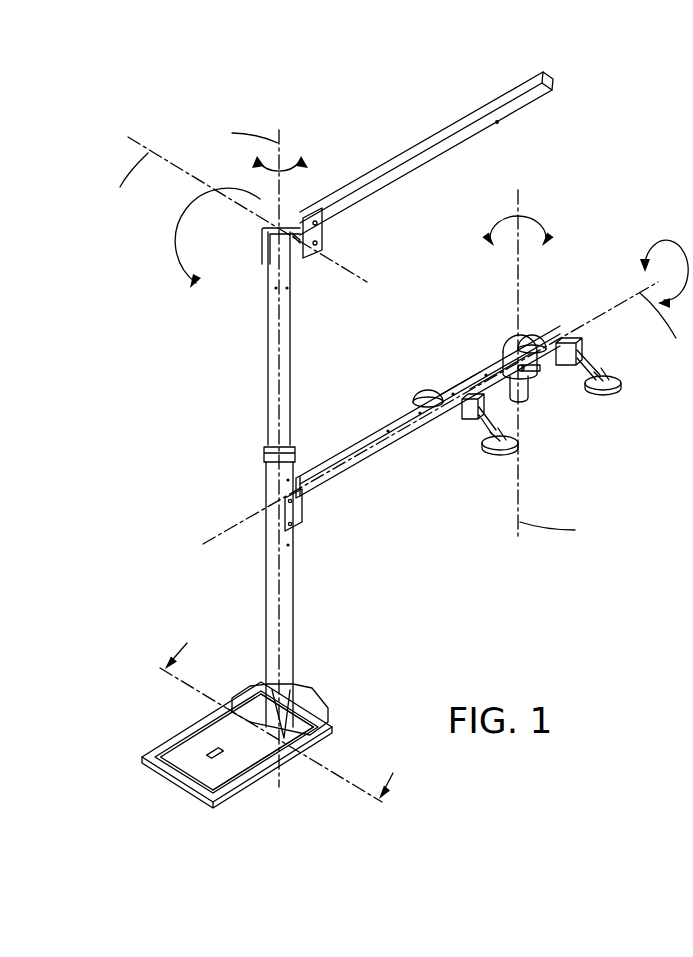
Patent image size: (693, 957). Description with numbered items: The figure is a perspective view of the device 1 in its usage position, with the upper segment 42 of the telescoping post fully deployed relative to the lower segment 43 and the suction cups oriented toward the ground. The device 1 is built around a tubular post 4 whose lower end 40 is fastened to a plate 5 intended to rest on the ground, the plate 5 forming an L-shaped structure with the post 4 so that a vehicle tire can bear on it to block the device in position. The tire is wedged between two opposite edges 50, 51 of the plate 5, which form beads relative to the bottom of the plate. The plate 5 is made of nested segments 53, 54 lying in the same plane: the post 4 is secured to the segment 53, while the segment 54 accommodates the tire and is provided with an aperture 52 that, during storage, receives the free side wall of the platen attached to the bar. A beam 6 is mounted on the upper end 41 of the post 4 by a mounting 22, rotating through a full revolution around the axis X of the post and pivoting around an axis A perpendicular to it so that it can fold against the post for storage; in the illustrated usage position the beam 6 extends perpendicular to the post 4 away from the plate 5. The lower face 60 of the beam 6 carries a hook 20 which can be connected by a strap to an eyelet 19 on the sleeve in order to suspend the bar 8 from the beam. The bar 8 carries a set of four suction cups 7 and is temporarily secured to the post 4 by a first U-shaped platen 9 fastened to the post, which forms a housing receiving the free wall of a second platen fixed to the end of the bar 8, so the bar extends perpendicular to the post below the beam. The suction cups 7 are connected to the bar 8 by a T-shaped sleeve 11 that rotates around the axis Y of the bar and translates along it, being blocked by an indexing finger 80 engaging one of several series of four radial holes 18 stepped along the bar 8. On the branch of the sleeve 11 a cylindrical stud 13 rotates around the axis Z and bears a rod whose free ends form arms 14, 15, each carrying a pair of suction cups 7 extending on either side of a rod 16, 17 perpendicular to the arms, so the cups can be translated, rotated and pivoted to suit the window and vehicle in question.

The device 1 is at (348, 96).
The tubular post 4 is at (275, 479).
The plate 5 is at (235, 743).
The beam 6 is at (430, 153).
The suction cups 7 is at (416, 397).
The bar 8 is at (368, 468).
The first U-shaped platen 9 is at (318, 514).
The T-shaped sleeve 11 is at (525, 376).
The cylindrical stud 13 is at (520, 398).
The arm 14 is at (500, 380).
The arm 15 is at (572, 366).
The rod 16 is at (475, 425).
The rod 17 is at (586, 362).
The holes 18 is at (468, 380).
The eyelet 19 is at (510, 343).
The hook 20 is at (500, 123).
The fastening plate 22 is at (272, 238).
The lower end 40 is at (300, 700).
The upper end 41 is at (266, 258).
The upper tube 42 is at (272, 360).
The lower tube 43 is at (272, 556).
The edge 50 is at (163, 750).
The edge 51 is at (235, 785).
The aperture 52 is at (210, 752).
The segment 53 is at (302, 745).
The segment 54 is at (182, 765).
The lower face 60 is at (407, 174).
The indexing finger 80 is at (535, 372).